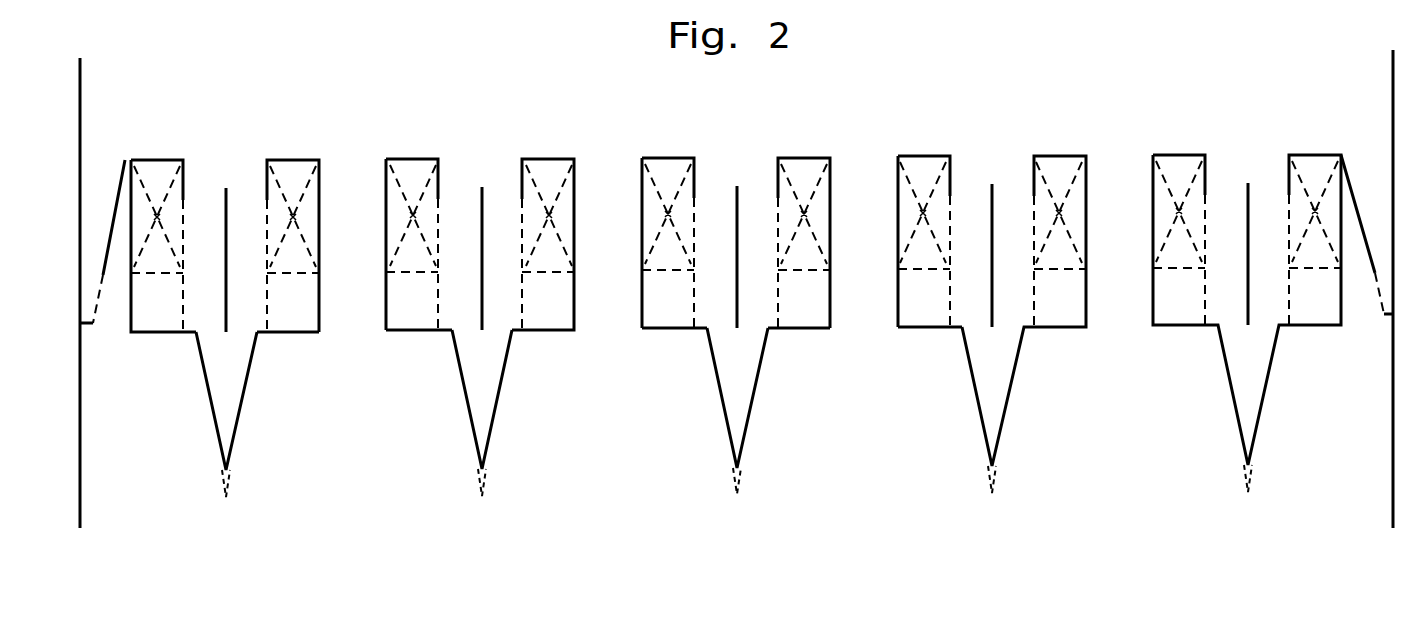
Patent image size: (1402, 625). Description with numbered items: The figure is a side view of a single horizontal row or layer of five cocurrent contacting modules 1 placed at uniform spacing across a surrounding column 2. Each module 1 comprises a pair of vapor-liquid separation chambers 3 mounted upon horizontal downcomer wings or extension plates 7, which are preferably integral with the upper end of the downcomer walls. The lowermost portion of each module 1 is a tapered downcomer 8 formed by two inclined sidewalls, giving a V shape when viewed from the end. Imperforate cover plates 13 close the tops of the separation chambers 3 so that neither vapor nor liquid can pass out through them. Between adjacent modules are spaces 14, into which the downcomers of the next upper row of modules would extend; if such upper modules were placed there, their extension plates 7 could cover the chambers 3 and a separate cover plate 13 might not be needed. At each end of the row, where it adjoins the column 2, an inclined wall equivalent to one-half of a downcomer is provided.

The cocurrent contacting module 1 is at (263, 338).
The column 2 is at (82, 110).
The vapor-liquid separation chamber 3 is at (777, 175).
The horizontal downcomer wing or extension plate 7 is at (797, 334).
The tapered downcomer 8 is at (718, 382).
The imperforate cover plate 13 is at (404, 160).
The space between modules 14 is at (351, 163).